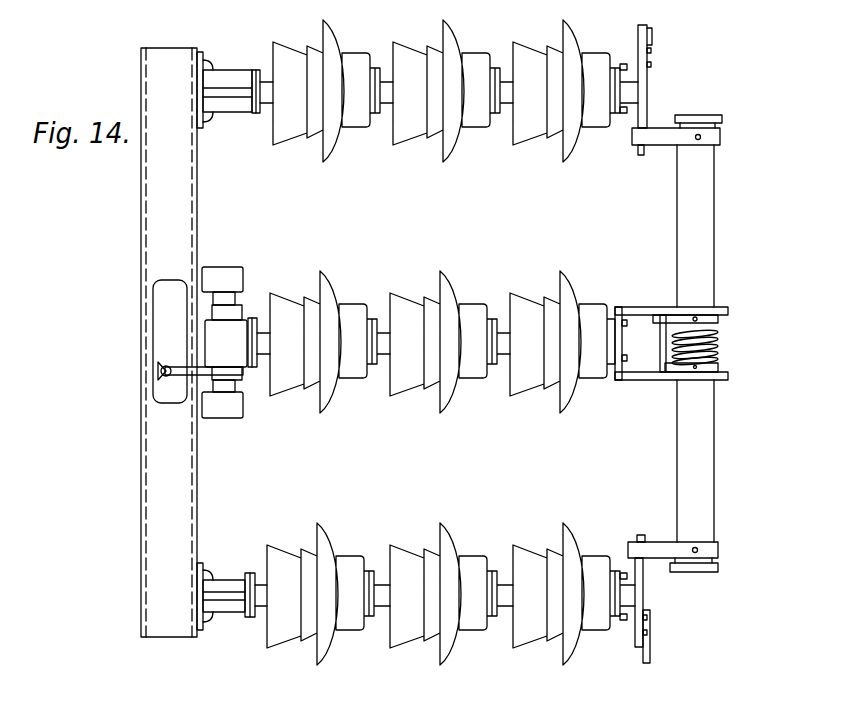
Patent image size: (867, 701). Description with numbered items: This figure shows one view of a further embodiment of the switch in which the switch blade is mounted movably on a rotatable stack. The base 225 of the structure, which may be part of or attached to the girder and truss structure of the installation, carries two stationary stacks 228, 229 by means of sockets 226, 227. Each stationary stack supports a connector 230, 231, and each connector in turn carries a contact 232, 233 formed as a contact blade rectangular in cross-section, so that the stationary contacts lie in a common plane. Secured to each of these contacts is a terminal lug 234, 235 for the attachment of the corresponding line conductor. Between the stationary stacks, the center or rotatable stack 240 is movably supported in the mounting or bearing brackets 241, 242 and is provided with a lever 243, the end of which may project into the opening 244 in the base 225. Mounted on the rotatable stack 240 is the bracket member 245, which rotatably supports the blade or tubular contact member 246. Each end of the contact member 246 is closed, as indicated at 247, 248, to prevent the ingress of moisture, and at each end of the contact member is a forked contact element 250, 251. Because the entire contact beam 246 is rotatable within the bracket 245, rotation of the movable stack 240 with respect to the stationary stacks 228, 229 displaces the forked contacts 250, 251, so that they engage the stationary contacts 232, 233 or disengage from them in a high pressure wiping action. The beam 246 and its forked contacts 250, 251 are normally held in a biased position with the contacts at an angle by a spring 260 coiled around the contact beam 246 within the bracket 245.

The base 225 is at (166, 56).
The socket 226 is at (223, 82).
The socket 227 is at (223, 608).
The stationary stack 228 is at (470, 35).
The stationary stack 229 is at (462, 529).
The connector 230 is at (615, 68).
The connector 231 is at (615, 625).
The contact 232 is at (643, 85).
The contact 233 is at (643, 595).
The terminal lug 234 is at (652, 32).
The terminal lug 235 is at (650, 658).
The rotatable stack 240 is at (458, 277).
The bearing bracket 241 is at (245, 268).
The bearing bracket 242 is at (236, 409).
The lever 243 is at (178, 379).
The opening 244 is at (158, 318).
The bracket member 245 is at (623, 307).
The tubular contact member 246 is at (714, 235).
The closed end 247 is at (710, 121).
The closed end 248 is at (708, 570).
The forked contact element 250 is at (718, 138).
The forked contact element 251 is at (716, 550).
The spring 260 is at (722, 340).